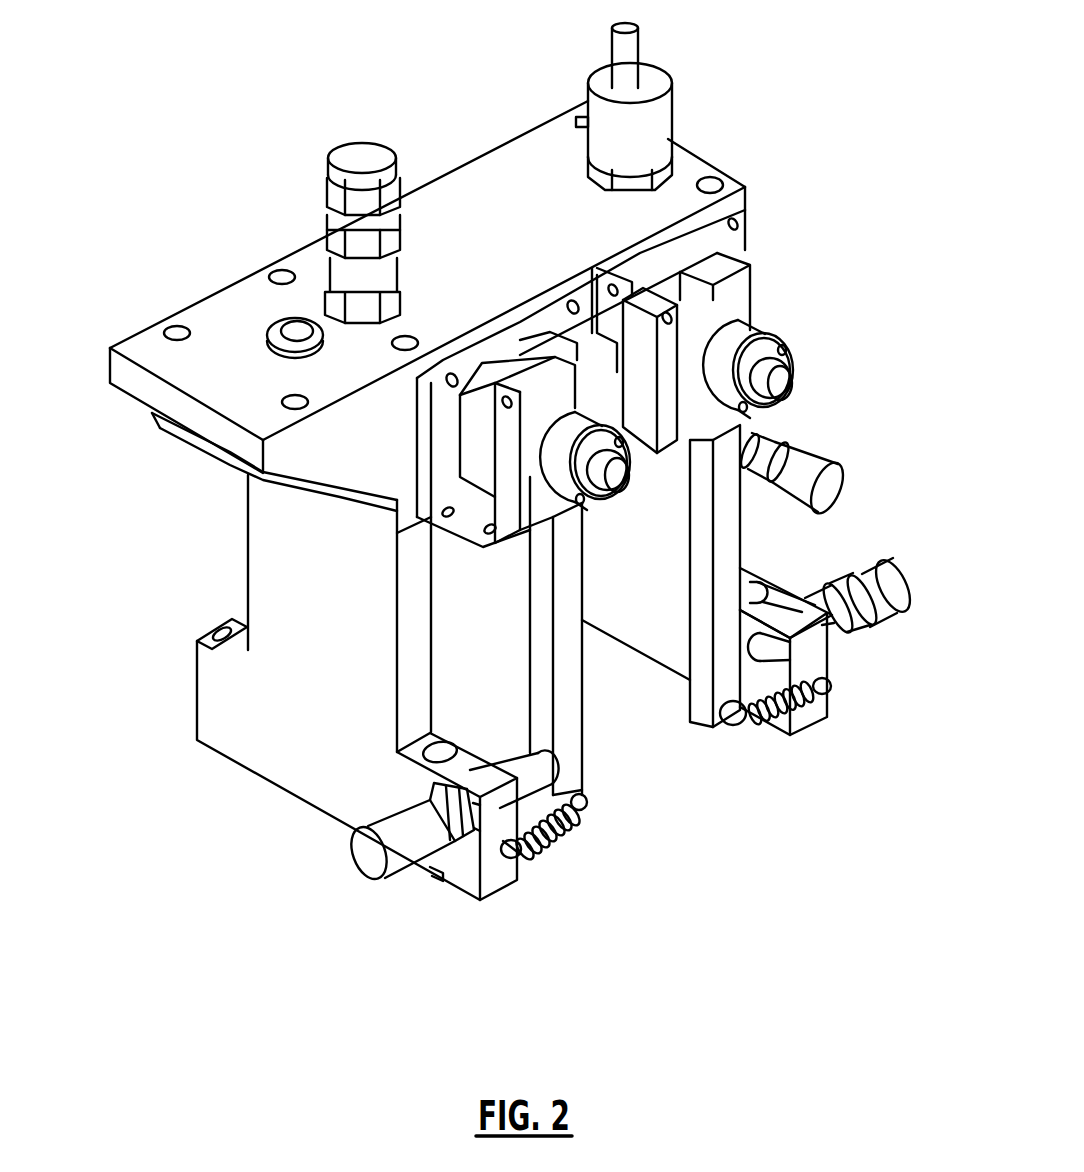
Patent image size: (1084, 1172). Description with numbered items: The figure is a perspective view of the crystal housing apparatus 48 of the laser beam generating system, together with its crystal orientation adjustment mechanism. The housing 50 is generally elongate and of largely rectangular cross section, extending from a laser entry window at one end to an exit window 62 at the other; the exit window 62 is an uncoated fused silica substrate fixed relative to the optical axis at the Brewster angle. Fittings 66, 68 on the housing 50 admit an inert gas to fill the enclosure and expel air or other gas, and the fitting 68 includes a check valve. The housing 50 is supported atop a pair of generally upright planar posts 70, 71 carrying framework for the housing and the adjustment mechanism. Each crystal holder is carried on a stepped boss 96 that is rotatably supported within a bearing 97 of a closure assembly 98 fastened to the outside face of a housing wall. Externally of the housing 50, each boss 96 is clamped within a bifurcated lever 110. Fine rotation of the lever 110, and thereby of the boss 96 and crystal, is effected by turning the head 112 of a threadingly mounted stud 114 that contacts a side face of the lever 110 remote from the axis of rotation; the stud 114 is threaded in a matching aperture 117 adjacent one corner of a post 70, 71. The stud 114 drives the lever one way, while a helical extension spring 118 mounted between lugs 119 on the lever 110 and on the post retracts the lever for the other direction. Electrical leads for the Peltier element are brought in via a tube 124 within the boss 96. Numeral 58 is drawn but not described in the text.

The crystal housing apparatus 48 is at (177, 767).
The housing 50 is at (470, 188).
The manifold body 58 is at (320, 450).
The exit window 62 is at (190, 443).
The fitting 66 is at (653, 120).
The fitting 68 is at (327, 193).
The post 70 is at (317, 770).
The post 71 is at (643, 630).
The stepped boss 96 is at (757, 327).
The bearing 97 is at (683, 267).
The closure assembly 98 is at (767, 224).
The bifurcated lever 110 is at (743, 532).
The head 112 is at (884, 611).
The stud 114 is at (797, 710).
The aperture 117 is at (792, 655).
The helical extension spring 118 is at (552, 838).
The lugs 119 is at (582, 800).
The tube 124 is at (795, 382).